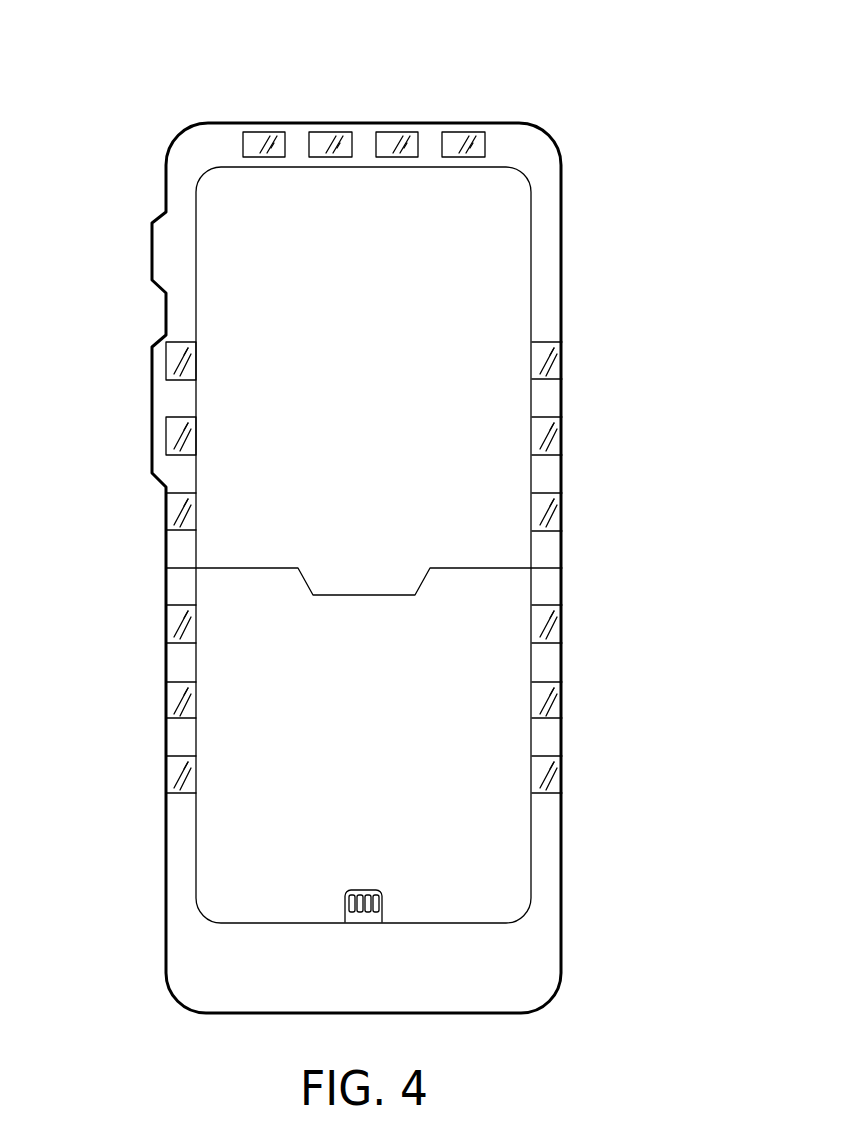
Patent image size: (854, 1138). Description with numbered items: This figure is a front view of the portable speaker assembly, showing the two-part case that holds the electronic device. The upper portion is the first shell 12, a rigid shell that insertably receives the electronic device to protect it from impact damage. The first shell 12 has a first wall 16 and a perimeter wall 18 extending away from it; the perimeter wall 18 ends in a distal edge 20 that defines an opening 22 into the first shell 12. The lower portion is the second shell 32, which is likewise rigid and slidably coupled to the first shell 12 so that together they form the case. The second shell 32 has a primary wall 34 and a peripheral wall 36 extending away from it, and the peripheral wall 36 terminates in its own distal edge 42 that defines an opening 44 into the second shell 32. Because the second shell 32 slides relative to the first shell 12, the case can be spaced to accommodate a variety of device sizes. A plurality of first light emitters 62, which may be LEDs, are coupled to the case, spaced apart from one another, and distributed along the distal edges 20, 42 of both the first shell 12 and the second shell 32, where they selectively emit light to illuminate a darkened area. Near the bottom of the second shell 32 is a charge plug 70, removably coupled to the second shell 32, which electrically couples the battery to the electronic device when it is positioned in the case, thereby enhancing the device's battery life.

The first shell 12 is at (357, 519).
The first wall 16 is at (362, 195).
The perimeter wall 18 is at (152, 252).
The distal edge 20 is at (210, 137).
The opening 22 is at (442, 200).
The second shell 32 is at (590, 962).
The primary wall 34 is at (483, 738).
The peripheral wall 36 is at (166, 862).
The distal edge 42 is at (187, 878).
The opening 44 is at (488, 672).
The first light emitters 62 is at (183, 613).
The charge plug 70 is at (370, 890).